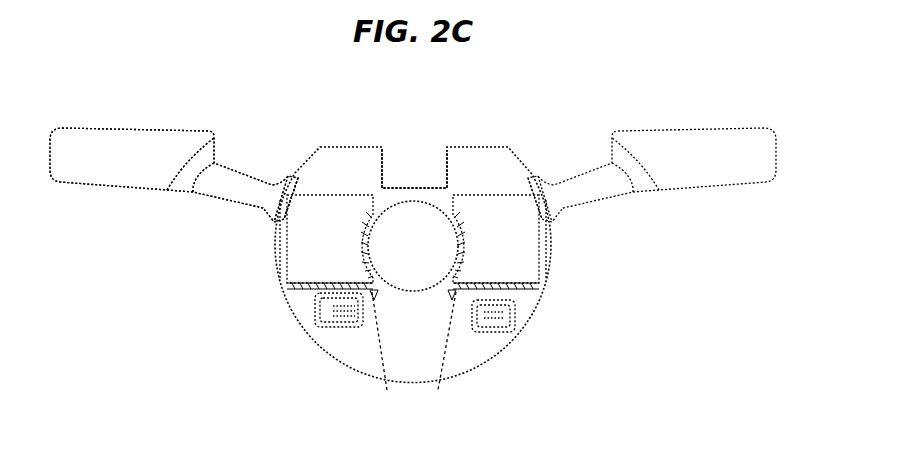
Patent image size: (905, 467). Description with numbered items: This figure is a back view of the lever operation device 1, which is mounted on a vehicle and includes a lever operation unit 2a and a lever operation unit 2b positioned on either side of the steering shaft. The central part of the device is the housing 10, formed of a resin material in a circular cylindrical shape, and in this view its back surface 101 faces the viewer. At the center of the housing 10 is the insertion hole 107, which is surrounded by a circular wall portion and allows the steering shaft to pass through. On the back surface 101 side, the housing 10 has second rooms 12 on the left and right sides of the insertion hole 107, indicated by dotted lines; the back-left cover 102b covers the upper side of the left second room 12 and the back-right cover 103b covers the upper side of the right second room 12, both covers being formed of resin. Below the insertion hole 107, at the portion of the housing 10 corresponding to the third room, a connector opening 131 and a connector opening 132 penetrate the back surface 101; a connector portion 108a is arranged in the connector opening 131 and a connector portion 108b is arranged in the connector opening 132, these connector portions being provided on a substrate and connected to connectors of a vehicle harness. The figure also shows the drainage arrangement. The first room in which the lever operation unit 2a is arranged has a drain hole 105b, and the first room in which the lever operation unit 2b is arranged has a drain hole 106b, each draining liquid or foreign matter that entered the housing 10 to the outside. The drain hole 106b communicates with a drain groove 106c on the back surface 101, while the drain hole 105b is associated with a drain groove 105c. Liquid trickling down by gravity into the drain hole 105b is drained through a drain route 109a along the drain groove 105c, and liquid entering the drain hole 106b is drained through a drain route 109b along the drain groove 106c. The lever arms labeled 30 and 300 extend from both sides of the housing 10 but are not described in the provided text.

The lever operation device 1 is at (798, 92).
The lever operation unit 2a is at (746, 113).
The lever operation unit 2b is at (90, 108).
The housing 10 is at (509, 150).
The second rooms 12 is at (329, 193).
The grip 30 is at (108, 189).
The grip cover 300 is at (172, 142).
The back surface 101 is at (433, 190).
The back-left cover 102b is at (537, 238).
The back-right cover 103b is at (292, 238).
The drain hole 105b is at (473, 247).
The drain groove 105c is at (470, 266).
The drain hole 106b is at (358, 247).
The drain groove 106c is at (360, 266).
The insertion hole 107 is at (394, 216).
The connector portion 108a is at (515, 325).
The connector portion 108b is at (316, 325).
The drain route 109a is at (441, 356).
The drain route 109b is at (392, 356).
The connector opening 131 is at (515, 317).
The connector opening 132 is at (316, 313).